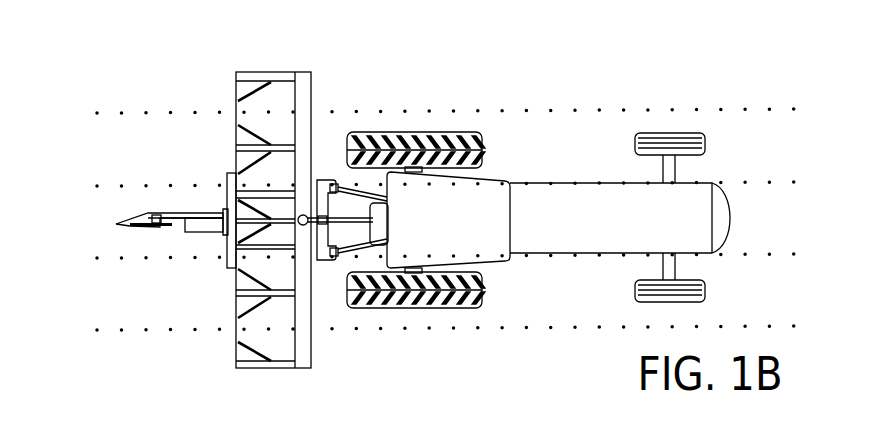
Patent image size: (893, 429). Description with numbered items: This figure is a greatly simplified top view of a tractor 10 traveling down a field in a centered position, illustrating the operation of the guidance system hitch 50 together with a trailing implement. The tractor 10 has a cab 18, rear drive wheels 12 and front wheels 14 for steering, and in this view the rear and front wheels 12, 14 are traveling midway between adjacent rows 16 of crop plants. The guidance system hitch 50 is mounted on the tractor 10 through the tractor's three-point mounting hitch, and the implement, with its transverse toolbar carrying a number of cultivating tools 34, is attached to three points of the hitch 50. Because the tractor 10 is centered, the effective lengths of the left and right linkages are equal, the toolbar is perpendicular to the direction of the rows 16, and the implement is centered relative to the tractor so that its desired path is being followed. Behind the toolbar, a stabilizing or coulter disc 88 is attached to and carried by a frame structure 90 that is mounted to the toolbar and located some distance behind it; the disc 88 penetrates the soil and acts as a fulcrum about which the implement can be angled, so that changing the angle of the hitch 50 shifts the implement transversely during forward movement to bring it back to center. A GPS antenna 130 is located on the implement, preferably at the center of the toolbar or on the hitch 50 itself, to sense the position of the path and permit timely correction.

The tractor 10 is at (593, 176).
The rear drive wheels 12 is at (440, 132).
The front wheels 14 is at (705, 163).
The rows 16 is at (78, 110).
The cab 18 is at (437, 230).
The cultivating tools 34 is at (236, 79).
The hitch 50 is at (331, 154).
The stabilizing disc 88 is at (143, 227).
The frame structure 90 is at (236, 268).
The GPS antenna 130 is at (304, 226).